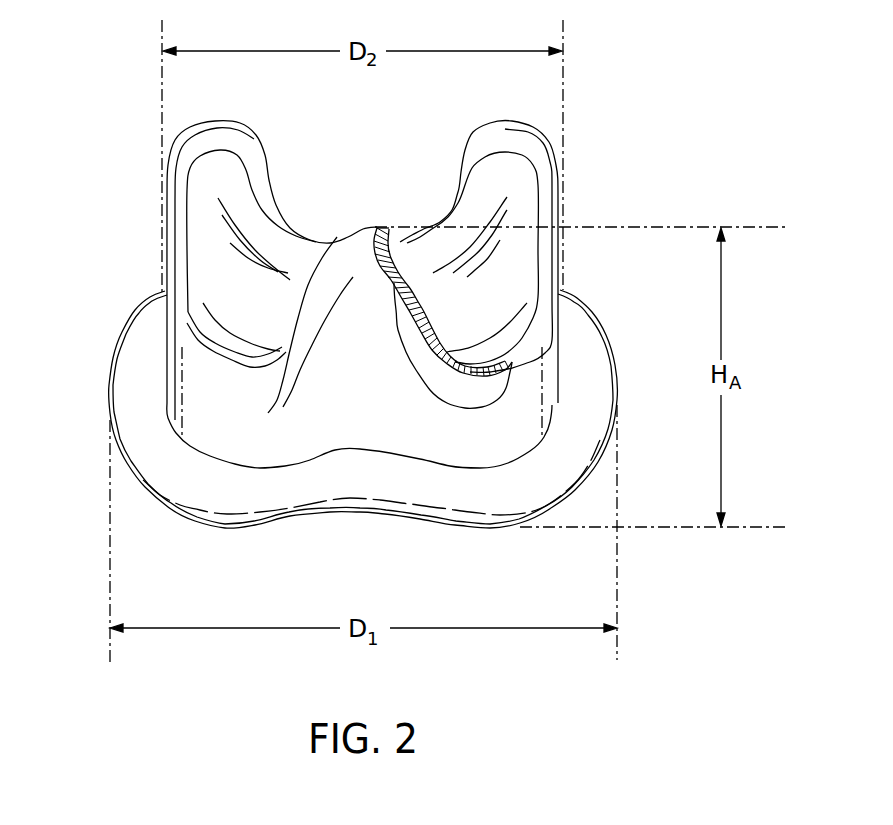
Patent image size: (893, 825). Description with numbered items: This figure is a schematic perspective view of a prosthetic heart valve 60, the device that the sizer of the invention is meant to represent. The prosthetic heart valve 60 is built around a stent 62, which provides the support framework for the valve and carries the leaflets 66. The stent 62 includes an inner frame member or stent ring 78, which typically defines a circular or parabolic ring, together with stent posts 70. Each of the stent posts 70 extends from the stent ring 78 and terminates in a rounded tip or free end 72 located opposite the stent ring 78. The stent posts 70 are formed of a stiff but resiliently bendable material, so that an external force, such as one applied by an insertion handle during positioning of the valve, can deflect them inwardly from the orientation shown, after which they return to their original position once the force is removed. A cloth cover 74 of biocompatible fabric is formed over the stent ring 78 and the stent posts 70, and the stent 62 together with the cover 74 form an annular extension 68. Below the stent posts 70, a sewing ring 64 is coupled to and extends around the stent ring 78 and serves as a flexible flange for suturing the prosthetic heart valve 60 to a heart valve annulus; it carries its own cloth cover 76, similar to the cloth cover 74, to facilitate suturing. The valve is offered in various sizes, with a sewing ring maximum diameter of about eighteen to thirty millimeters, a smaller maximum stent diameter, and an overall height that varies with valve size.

The prosthetic heart valve 60 is at (540, 84).
The stent 62 is at (387, 232).
The sewing ring 64 is at (123, 377).
The leaflets 66 is at (287, 235).
The annular extension 68 is at (147, 190).
The stent posts 70 is at (413, 327).
The free end 72 is at (222, 120).
The cloth cover 74 is at (197, 143).
The cloth cover 76 is at (145, 480).
The stent ring 78 is at (457, 397).